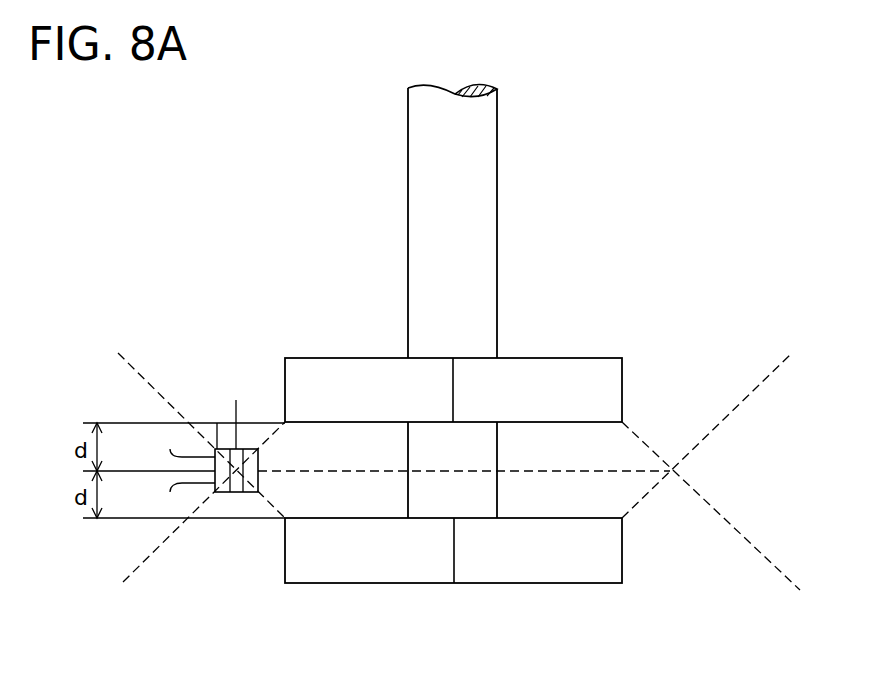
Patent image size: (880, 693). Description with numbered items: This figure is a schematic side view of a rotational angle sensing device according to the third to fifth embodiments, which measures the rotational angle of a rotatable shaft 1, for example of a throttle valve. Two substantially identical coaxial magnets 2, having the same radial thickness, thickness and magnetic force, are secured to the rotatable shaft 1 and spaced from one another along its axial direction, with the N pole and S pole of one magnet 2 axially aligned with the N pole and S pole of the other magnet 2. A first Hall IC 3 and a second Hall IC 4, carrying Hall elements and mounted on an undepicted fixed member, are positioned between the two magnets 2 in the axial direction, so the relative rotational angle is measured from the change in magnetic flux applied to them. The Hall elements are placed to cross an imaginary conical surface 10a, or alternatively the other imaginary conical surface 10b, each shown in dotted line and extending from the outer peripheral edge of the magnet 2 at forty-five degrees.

The rotatable shaft 1 is at (478, 157).
The magnet 2 is at (573, 358).
The first Hall IC 3 is at (250, 449).
The second Hall IC 4 is at (217, 449).
The imaginary conical surface 10a is at (742, 538).
The imaginary conical surface 10b is at (742, 402).